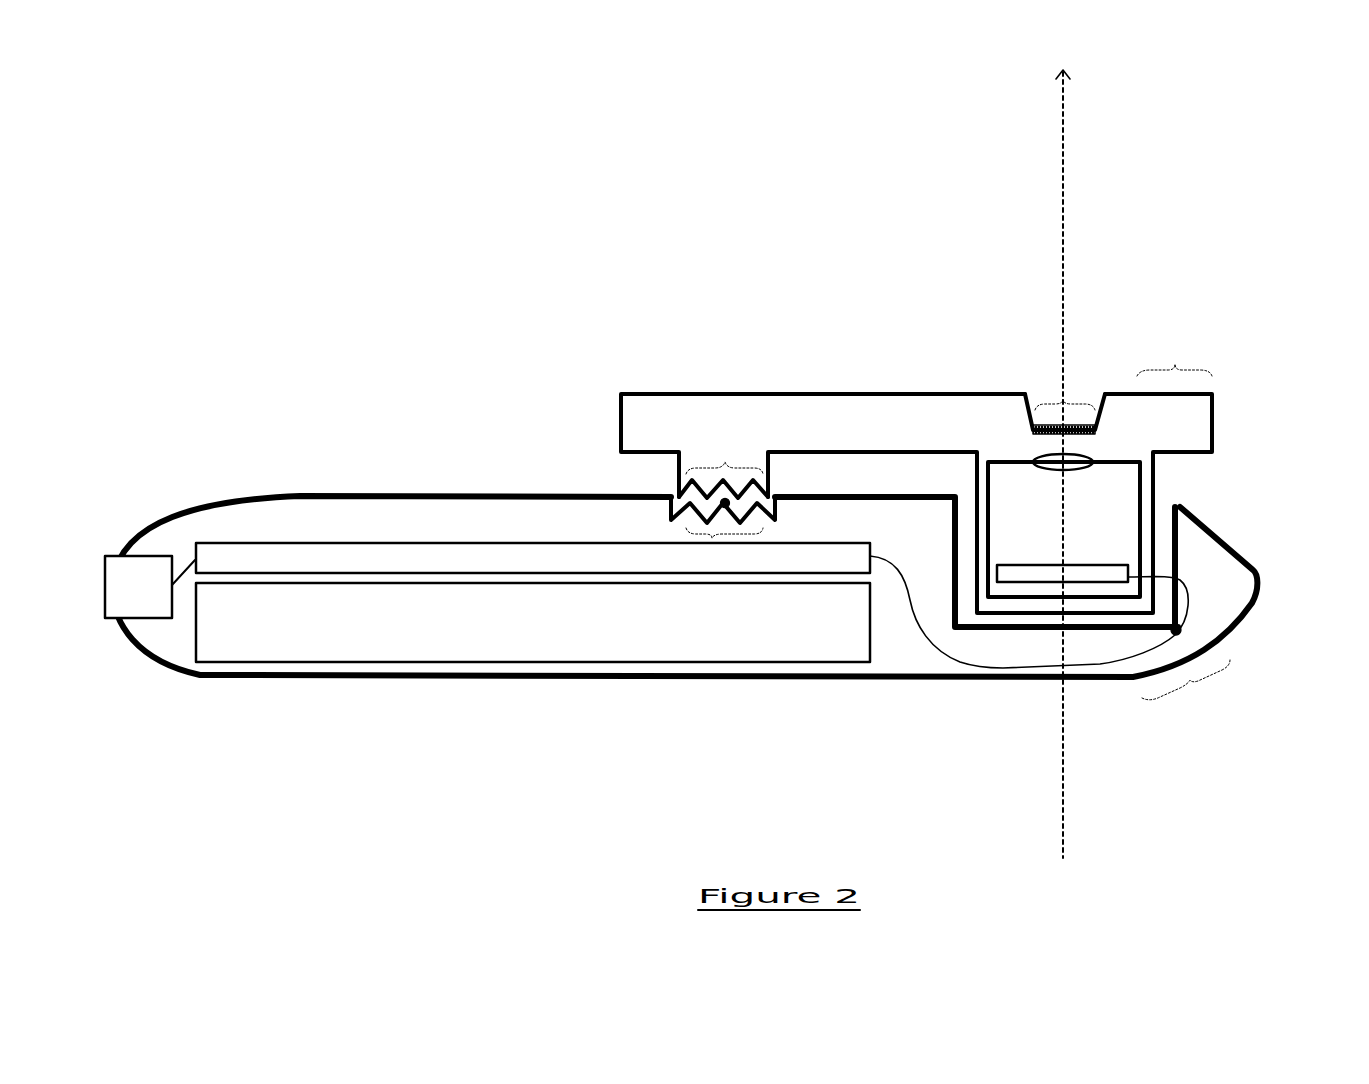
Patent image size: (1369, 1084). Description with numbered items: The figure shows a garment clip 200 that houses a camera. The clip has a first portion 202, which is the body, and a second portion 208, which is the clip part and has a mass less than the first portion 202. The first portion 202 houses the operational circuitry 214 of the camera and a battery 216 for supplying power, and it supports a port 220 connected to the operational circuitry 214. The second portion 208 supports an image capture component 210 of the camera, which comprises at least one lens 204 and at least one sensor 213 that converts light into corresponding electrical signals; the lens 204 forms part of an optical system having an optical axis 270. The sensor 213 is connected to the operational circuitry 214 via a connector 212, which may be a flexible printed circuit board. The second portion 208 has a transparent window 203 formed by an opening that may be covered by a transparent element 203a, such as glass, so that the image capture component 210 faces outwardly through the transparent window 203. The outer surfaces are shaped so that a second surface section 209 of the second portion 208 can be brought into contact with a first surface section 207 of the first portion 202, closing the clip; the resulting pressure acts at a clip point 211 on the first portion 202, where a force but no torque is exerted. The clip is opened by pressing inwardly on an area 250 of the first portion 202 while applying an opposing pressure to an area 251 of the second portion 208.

The garment clip 200 is at (298, 247).
The first portion 202 is at (1256, 572).
The transparent window 203 is at (1050, 398).
The transparent element 203a is at (1027, 428).
The lens 204 is at (1077, 450).
The first surface section 207 is at (712, 538).
The second portion 208 is at (805, 394).
The second surface section 209 is at (725, 462).
The image capture component 210 is at (1140, 528).
The clip point 211 is at (725, 503).
The connector 212 is at (1003, 668).
The sensor 213 is at (1005, 577).
The operational circuitry 214 is at (531, 543).
The battery 216 is at (531, 662).
The port 220 is at (140, 556).
The area 250 is at (1174, 354).
The area 251 is at (1186, 689).
The optical axis 270 is at (1084, 462).